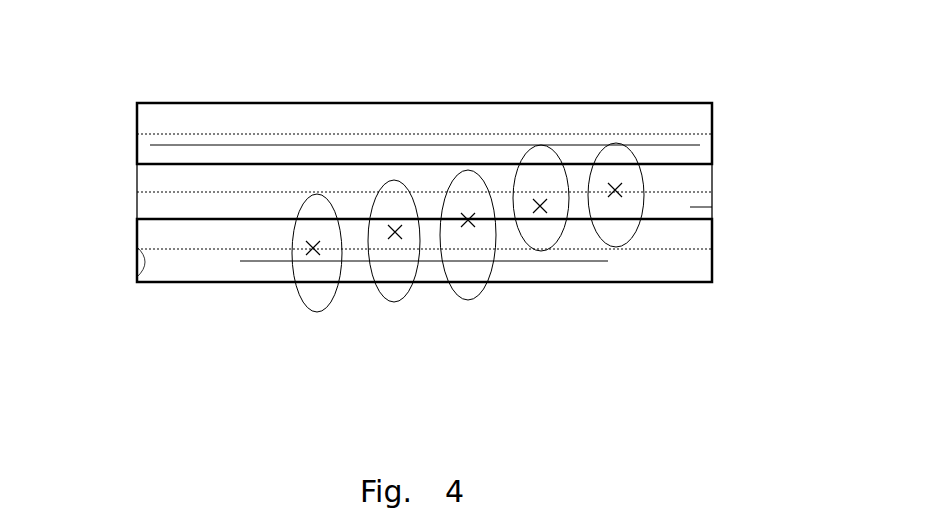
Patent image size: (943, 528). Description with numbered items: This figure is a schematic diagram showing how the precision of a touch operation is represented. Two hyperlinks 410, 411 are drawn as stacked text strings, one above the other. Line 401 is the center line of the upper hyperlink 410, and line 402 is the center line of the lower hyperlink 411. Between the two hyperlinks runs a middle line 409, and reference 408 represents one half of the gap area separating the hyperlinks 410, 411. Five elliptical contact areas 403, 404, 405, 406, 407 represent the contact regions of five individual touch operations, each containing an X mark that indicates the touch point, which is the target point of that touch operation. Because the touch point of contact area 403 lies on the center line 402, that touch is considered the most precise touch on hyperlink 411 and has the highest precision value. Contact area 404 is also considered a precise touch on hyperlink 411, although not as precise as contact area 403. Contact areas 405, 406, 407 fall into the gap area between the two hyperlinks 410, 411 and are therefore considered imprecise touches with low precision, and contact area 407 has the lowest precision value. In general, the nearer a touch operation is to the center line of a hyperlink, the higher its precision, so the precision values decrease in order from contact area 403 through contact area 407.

The center line of hyperlink 410 401 is at (135, 128).
The center line of hyperlink 411 402 is at (138, 282).
The contact area 403 is at (316, 313).
The contact area 404 is at (398, 300).
The contact area 405 is at (467, 290).
The contact area 406 is at (535, 252).
The contact area 407 is at (616, 250).
The half of the gap area 408 is at (712, 207).
The middle line 409 is at (712, 193).
The hyperlink 410 is at (700, 100).
The hyperlink 411 is at (703, 283).